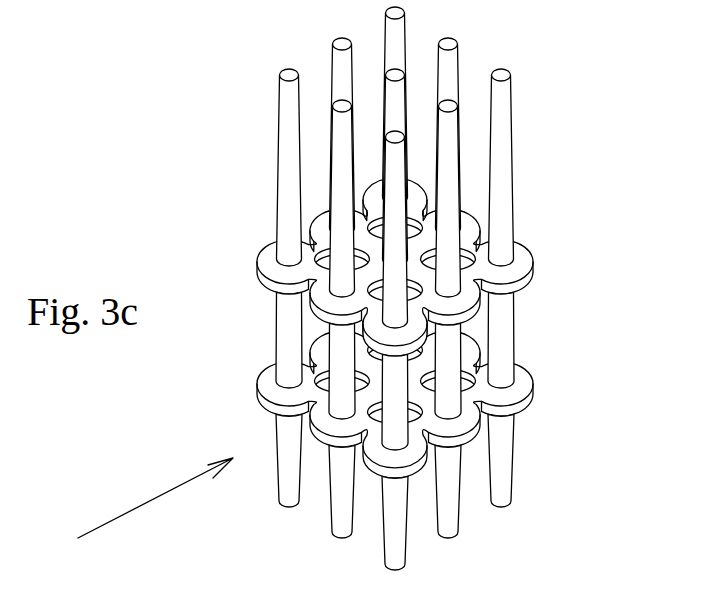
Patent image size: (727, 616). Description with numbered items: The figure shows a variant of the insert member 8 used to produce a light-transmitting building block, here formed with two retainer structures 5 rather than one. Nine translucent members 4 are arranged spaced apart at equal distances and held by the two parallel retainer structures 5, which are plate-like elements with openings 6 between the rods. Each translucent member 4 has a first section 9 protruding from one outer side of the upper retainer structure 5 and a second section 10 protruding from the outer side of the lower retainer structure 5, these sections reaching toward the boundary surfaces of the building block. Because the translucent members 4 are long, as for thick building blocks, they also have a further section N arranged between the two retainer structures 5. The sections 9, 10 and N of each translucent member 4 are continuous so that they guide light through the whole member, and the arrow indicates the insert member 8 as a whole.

The translucent member 4 is at (285, 136).
The retainer structure 5 is at (522, 263).
The opening 6 is at (466, 258).
The insert member 8 is at (147, 506).
The first section 9 is at (513, 165).
The second section 10 is at (513, 466).
The further section N is at (515, 332).